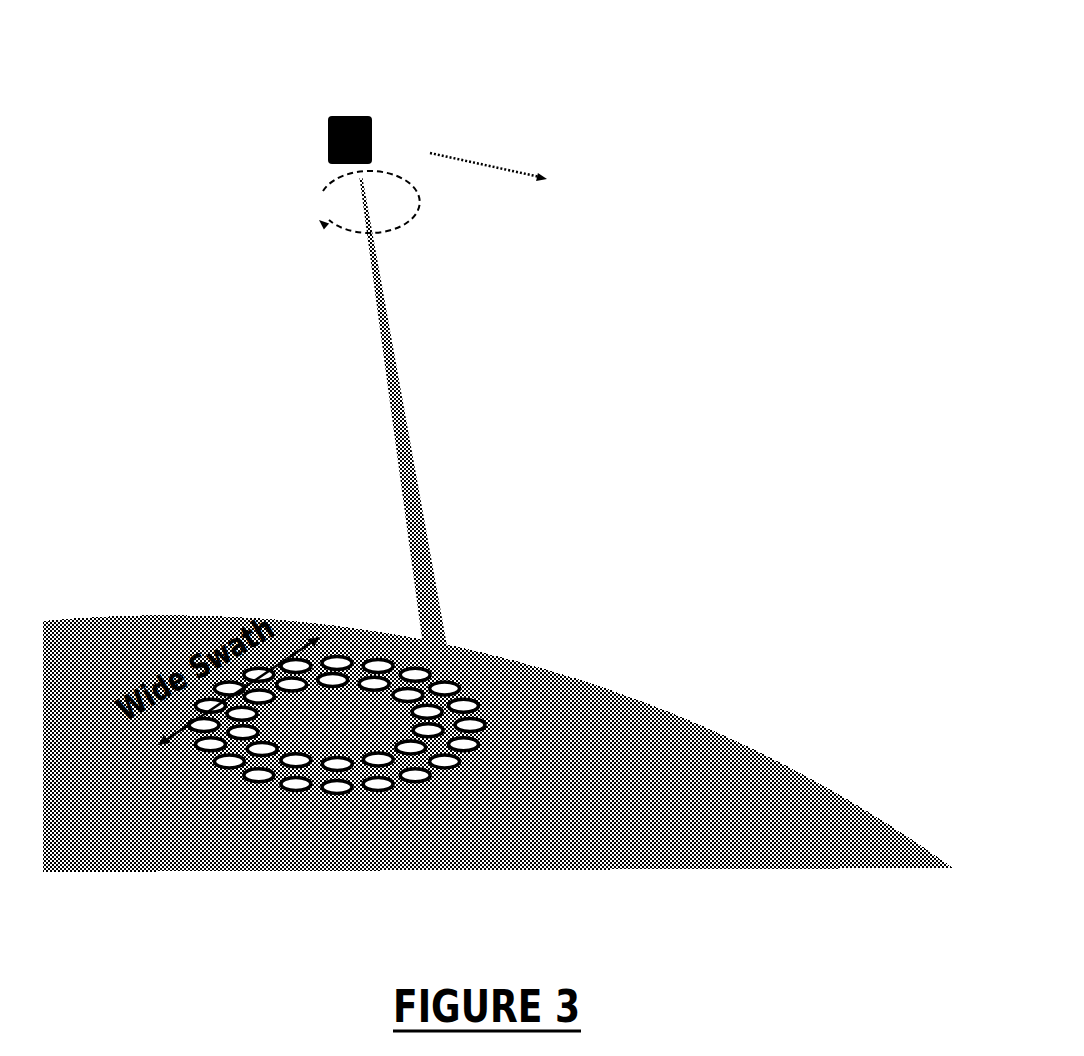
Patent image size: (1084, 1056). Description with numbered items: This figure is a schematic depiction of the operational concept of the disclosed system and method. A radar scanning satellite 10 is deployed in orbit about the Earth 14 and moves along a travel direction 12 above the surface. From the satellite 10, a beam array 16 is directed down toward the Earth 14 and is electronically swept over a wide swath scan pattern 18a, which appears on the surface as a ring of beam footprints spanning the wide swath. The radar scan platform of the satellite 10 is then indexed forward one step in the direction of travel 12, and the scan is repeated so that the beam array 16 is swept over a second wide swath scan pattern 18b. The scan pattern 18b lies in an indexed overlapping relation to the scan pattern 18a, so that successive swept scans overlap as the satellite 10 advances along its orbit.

The radar scanning satellite 10 is at (330, 143).
The travel direction 12 is at (500, 172).
The Earth 14 is at (703, 758).
The beam array 16 is at (394, 427).
The wide swath scan pattern 18a is at (337, 652).
The wide swath scan pattern 18b is at (392, 682).